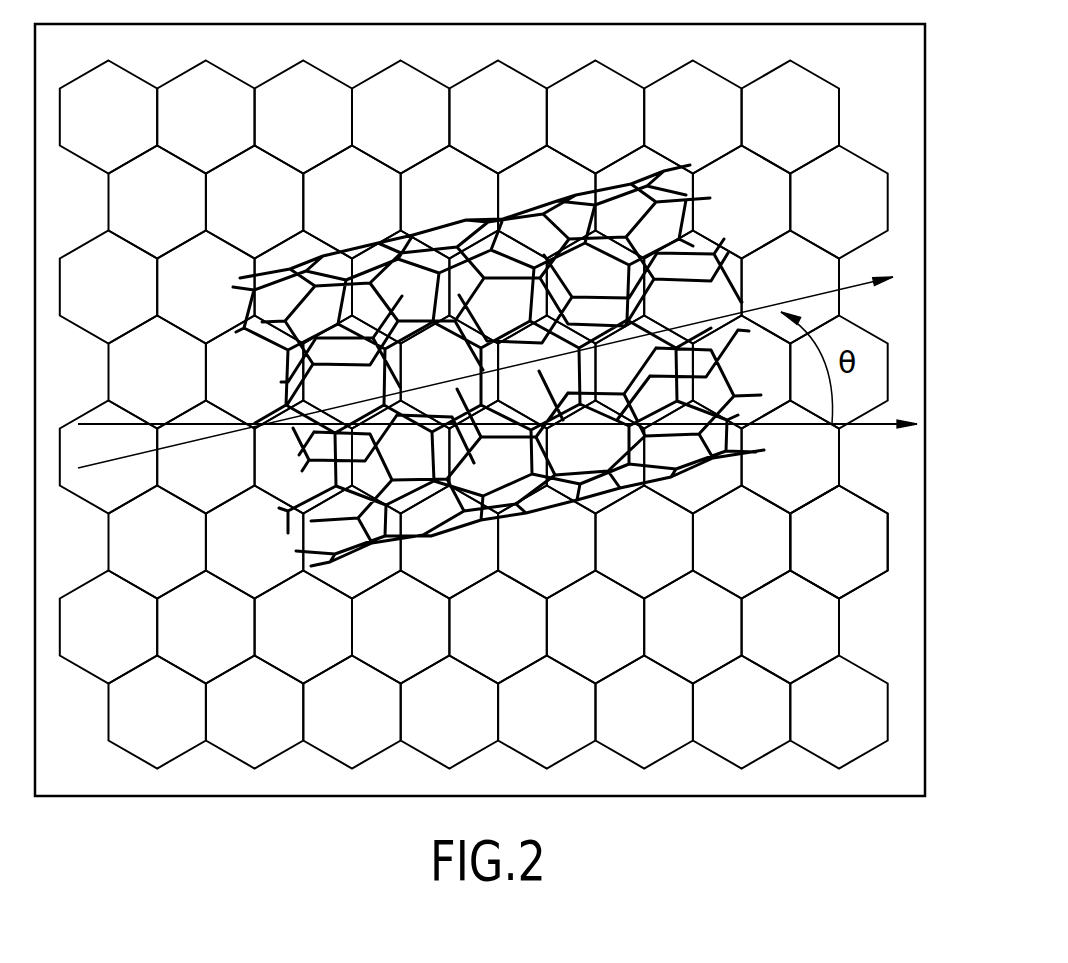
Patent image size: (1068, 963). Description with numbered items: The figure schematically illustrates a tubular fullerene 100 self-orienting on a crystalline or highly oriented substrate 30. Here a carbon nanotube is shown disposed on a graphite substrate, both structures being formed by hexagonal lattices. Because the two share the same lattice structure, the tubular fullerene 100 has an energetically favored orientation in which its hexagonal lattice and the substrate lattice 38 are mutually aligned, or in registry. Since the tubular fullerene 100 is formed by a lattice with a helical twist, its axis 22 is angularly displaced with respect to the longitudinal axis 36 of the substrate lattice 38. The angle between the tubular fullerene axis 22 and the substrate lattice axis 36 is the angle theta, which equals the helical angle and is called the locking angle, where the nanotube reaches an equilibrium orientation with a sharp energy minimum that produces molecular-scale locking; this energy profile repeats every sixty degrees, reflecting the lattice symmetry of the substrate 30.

The substrate 30 is at (897, 118).
The tubular fullerene 100 is at (715, 200).
The axis of the tubular fullerene 22 is at (855, 282).
The longitudinal axis of the substrate lattice 36 is at (870, 424).
The substrate lattice 38 is at (885, 570).